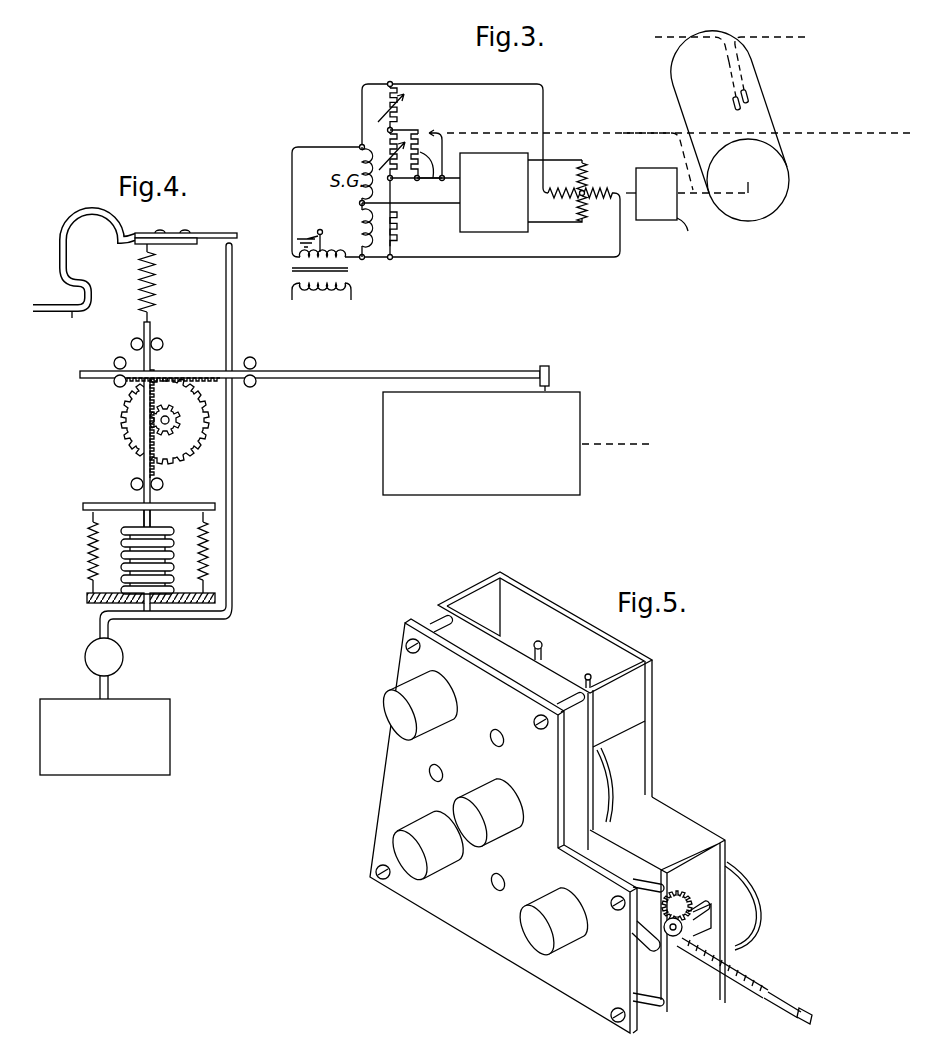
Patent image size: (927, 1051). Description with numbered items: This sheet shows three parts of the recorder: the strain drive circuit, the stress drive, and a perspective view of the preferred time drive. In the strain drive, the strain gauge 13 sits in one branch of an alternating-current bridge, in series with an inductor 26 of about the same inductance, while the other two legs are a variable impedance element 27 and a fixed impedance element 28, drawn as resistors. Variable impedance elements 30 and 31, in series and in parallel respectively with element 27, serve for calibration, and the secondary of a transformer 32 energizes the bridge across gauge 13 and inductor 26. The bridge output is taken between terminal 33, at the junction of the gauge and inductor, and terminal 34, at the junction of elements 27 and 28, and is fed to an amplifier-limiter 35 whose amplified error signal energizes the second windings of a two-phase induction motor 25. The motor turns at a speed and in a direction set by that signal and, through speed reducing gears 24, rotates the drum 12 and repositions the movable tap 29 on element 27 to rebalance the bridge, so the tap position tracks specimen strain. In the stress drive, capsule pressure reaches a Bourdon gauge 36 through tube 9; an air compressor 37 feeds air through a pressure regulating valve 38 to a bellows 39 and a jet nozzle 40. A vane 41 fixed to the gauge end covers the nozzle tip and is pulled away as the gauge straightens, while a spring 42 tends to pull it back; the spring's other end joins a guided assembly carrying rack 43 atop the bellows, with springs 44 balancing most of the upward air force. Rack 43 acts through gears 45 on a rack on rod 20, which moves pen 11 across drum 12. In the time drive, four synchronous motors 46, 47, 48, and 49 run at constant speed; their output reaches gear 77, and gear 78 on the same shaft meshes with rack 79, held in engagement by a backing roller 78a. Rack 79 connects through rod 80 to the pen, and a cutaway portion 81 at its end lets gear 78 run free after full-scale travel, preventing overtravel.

In FIG. 4, the tube 9 is at (50, 306).
In FIG. 4, the pen 11 is at (556, 372).
In FIG. 3, the drum 12 is at (772, 197).
In FIG. 4, the drum 12 is at (567, 414).
In FIG. 3, the strain gauge 13 is at (356, 158).
In FIG. 4, the rod 20 is at (306, 371).
In FIG. 3, the speed reducing gears 24 is at (694, 196).
In FIG. 3, the motor 25 is at (592, 185).
In FIG. 3, the inductor 26 is at (357, 218).
In FIG. 3, the variable impedance element 27 is at (436, 182).
In FIG. 3, the fixed impedance element 28 is at (398, 228).
In FIG. 3, the movable tap 29 is at (432, 128).
In FIG. 3, the variable impedance element 30 is at (382, 114).
In FIG. 3, the variable impedance element 31 is at (383, 150).
In FIG. 3, the transformer 32 is at (350, 271).
In FIG. 3, the terminal 33 is at (358, 203).
In FIG. 3, the terminal 34 is at (388, 181).
In FIG. 3, the amplifier-limiter 35 is at (500, 226).
In FIG. 4, the Bourdon gauge 36 is at (80, 220).
In FIG. 4, the air compressor 37 is at (104, 768).
In FIG. 4, the pressure regulating valve 38 is at (124, 660).
In FIG. 4, the bellows 39 is at (178, 545).
In FIG. 4, the jet nozzle 40 is at (236, 245).
In FIG. 4, the vane 41 is at (221, 233).
In FIG. 4, the spring 42 is at (158, 282).
In FIG. 4, the rack 43 is at (146, 466).
In FIG. 4, the springs 44 is at (88, 545).
In FIG. 4, the gears 45 is at (177, 376).
In FIG. 5, the synchronous electric motor 46 is at (390, 715).
In FIG. 5, the synchronous electric motor 47 is at (456, 805).
In FIG. 5, the synchronous electric motor 48 is at (394, 847).
In FIG. 5, the synchronous electric motor 49 is at (530, 942).
In FIG. 5, the gear 77 is at (748, 905).
In FIG. 5, the gear 78 is at (681, 934).
In FIG. 5, the backing roller 78a is at (668, 962).
In FIG. 5, the rack 79 is at (758, 982).
In FIG. 5, the rod 80 is at (797, 1023).
In FIG. 5, the cutaway portion 81 is at (771, 1001).